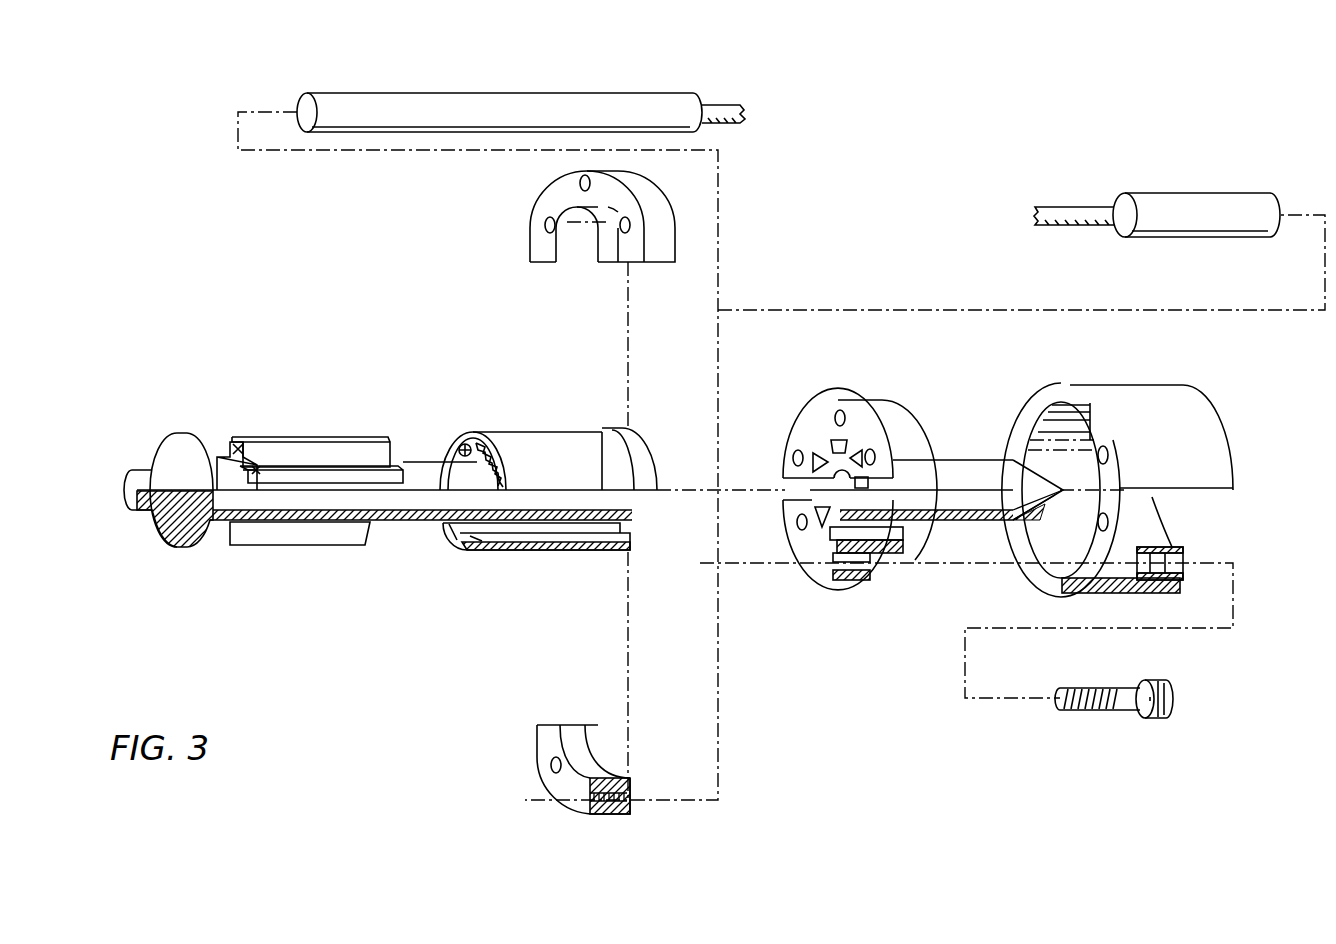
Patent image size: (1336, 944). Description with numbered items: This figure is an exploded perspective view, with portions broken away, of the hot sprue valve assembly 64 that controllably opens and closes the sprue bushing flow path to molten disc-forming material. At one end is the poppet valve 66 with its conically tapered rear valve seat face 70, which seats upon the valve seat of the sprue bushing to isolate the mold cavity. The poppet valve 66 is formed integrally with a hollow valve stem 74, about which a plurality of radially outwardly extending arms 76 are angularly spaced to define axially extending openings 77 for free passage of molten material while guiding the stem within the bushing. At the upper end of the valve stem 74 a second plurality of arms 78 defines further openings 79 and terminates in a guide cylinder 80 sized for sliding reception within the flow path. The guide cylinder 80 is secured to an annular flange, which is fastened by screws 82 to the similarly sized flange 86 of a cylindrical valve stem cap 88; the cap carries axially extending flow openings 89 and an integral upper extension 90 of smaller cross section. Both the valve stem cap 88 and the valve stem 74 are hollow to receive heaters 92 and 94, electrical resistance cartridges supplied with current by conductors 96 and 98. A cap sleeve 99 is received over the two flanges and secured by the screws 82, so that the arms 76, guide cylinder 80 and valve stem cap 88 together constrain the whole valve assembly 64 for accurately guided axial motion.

The hot sprue valve assembly 64 is at (506, 577).
The poppet valve 66 is at (163, 438).
The rear valve seat face 70 is at (205, 449).
The valve stem 74 is at (419, 462).
The arms 76 is at (304, 470).
The openings 77 is at (256, 468).
The arms 78 is at (481, 462).
The openings 79 is at (475, 537).
The guide cylinder 80 is at (572, 432).
The screws 82 is at (1153, 718).
The flange 86 is at (813, 412).
The valve stem cap 88 is at (920, 456).
The flow openings 89 is at (858, 463).
The upper extension 90 is at (985, 440).
The heater 92 is at (1200, 200).
The heater 94 is at (482, 101).
The conductor 96 is at (1058, 206).
The conductor 98 is at (727, 108).
The cap sleeve 99 is at (1185, 398).